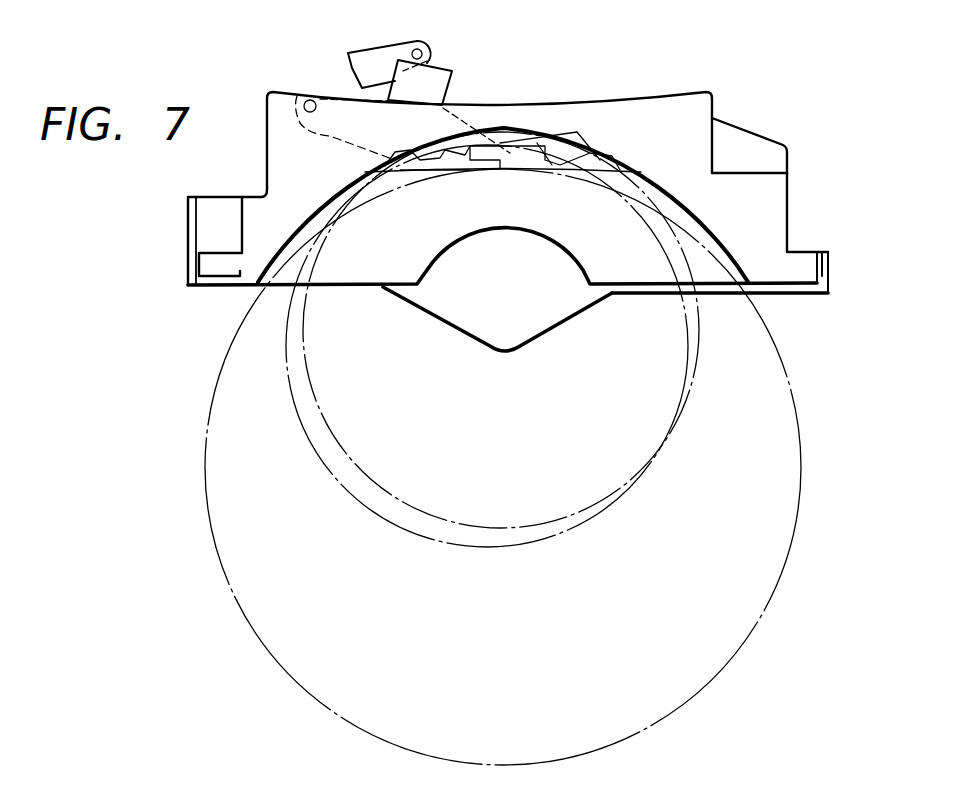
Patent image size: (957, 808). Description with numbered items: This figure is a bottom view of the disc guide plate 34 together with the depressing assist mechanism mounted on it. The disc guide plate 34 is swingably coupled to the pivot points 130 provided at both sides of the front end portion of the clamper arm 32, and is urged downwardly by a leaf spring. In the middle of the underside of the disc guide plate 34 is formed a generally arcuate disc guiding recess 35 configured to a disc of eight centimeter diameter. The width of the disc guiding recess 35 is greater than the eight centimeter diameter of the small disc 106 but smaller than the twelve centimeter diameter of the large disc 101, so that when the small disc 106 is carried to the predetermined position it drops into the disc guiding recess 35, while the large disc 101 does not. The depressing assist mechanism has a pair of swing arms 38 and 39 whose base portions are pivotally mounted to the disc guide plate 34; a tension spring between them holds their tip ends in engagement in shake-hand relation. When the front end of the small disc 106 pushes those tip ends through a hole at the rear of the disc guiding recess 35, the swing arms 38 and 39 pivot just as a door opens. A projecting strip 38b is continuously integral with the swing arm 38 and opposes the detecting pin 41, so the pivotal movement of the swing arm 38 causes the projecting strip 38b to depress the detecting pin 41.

The clamper arm 32 is at (778, 142).
The disc guide plate 34 is at (778, 216).
The disc guiding recess 35 is at (650, 183).
The swing arm 38 is at (335, 118).
The projecting strip 38b is at (452, 72).
The swing arm 39 is at (553, 143).
The detecting pin 41 is at (428, 48).
The large disc 101 is at (797, 467).
The small disc 106 is at (697, 367).
The pivot points 130 is at (197, 268).